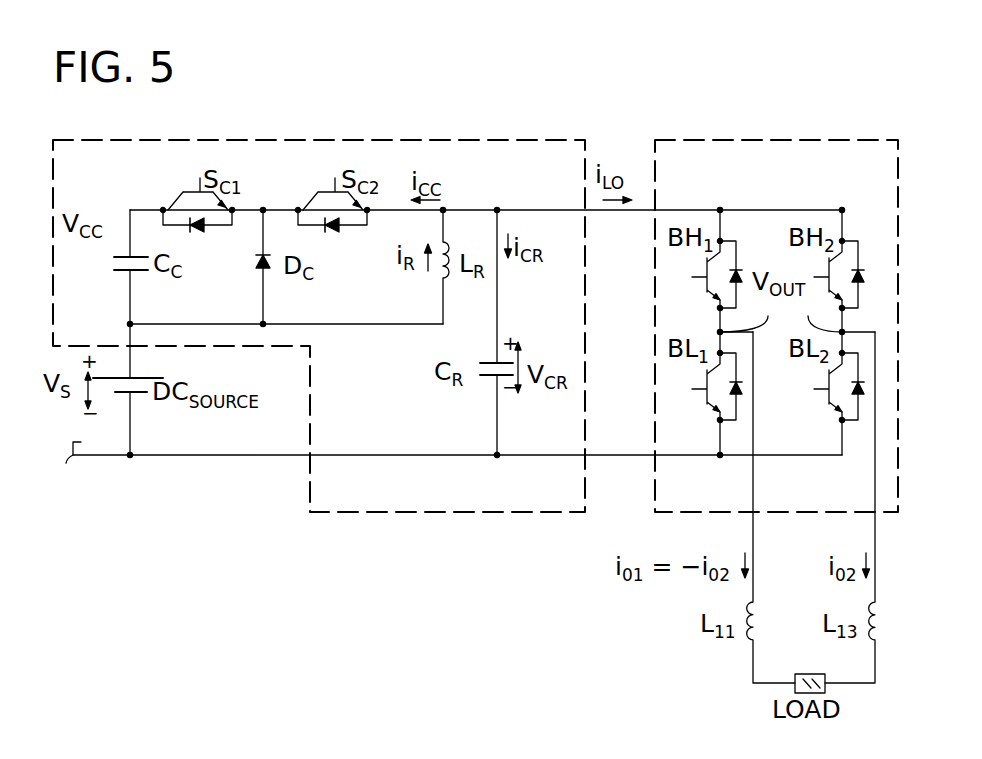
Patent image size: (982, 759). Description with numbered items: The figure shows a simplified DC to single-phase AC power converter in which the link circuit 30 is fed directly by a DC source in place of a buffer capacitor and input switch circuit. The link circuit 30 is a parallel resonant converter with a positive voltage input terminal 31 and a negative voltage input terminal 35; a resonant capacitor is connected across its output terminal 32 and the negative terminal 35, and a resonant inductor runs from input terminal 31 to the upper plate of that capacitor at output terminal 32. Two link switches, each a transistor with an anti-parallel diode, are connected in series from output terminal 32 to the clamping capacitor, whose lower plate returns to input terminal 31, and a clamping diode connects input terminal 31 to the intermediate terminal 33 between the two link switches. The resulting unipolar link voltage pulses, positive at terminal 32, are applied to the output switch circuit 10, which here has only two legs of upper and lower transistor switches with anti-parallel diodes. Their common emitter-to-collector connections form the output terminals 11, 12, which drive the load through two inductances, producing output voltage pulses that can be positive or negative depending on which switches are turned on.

The link circuit 30 is at (319, 308).
The output switch circuit 10 is at (774, 308).
The positive voltage input terminal 31 is at (130, 324).
The output terminal 32 is at (497, 210).
The intermediate terminal 33 is at (263, 210).
The negative voltage input terminal 35 is at (130, 455).
The output terminal 11 is at (720, 332).
The output terminal 12 is at (842, 332).